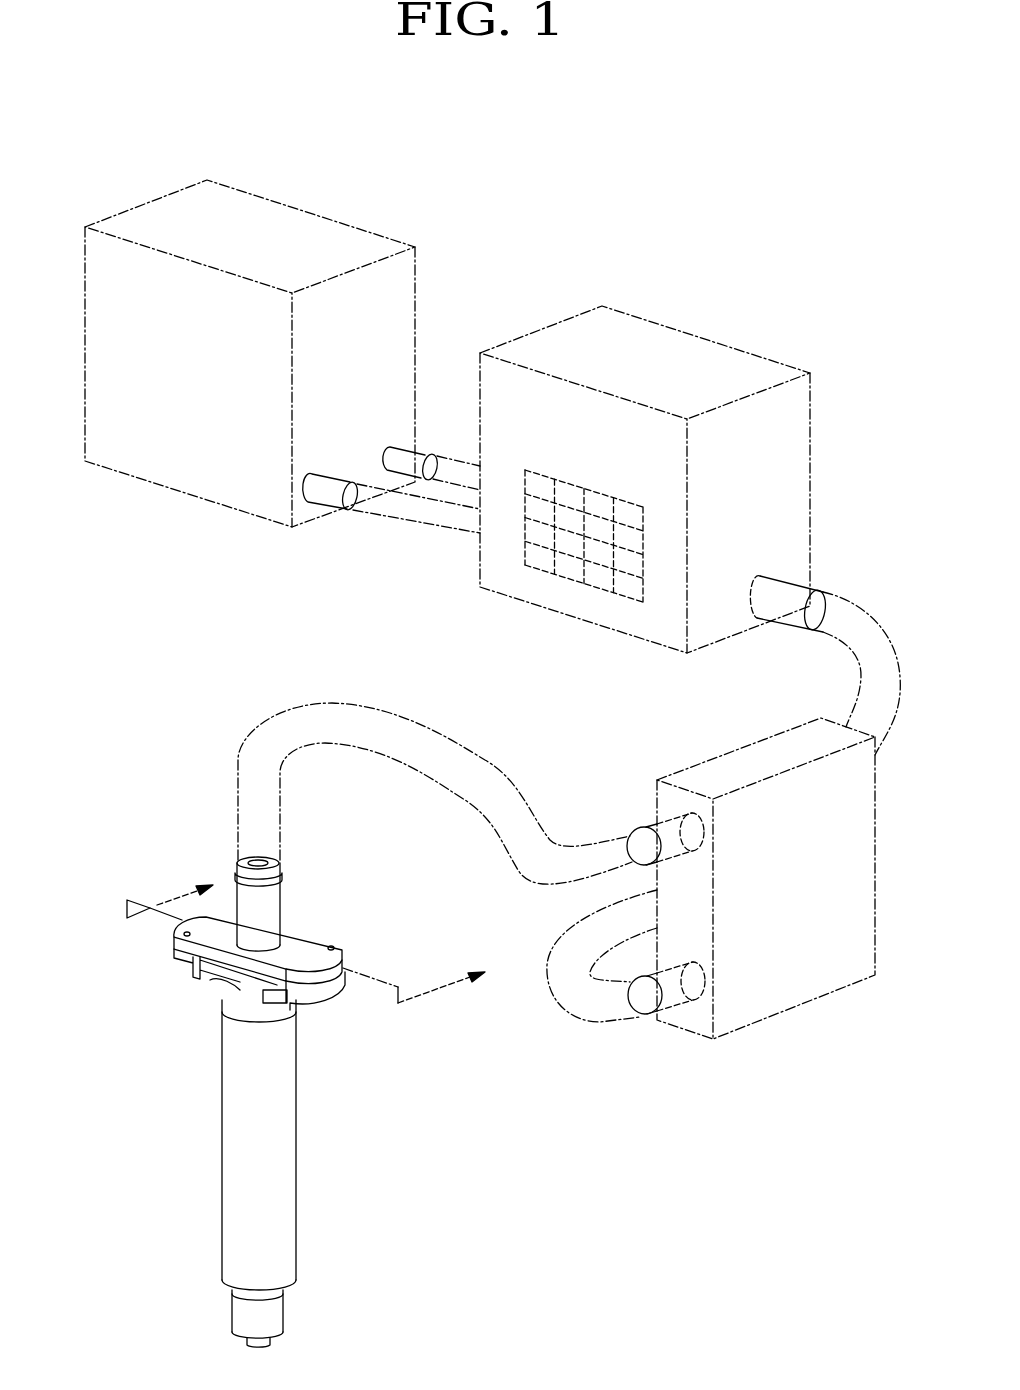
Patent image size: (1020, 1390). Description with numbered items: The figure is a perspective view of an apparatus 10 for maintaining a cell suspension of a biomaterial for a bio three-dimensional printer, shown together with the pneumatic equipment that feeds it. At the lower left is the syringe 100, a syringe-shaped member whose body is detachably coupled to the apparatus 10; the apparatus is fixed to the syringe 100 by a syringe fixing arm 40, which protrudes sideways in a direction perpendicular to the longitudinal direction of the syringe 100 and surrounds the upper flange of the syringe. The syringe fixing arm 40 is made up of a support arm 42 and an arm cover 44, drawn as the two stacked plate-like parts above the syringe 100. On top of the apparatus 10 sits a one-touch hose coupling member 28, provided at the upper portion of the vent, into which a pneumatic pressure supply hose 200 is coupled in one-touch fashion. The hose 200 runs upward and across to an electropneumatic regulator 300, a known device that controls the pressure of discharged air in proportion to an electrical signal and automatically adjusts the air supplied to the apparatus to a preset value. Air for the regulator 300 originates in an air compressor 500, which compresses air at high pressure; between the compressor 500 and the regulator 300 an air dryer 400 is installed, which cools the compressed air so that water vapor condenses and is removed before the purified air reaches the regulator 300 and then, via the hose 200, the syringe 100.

The apparatus for maintaining a cell suspension 10 is at (205, 1198).
The one-touch hose coupling member 28 is at (263, 911).
The syringe fixing arm 40 is at (85, 952).
The support arm 42 is at (195, 930).
The arm cover 44 is at (190, 973).
The syringe 100 is at (295, 1233).
The pneumatic pressure supply hose 200 is at (488, 760).
The electropneumatic regulator 300 is at (830, 988).
The air dryer 400 is at (763, 357).
The air compressor 500 is at (363, 231).